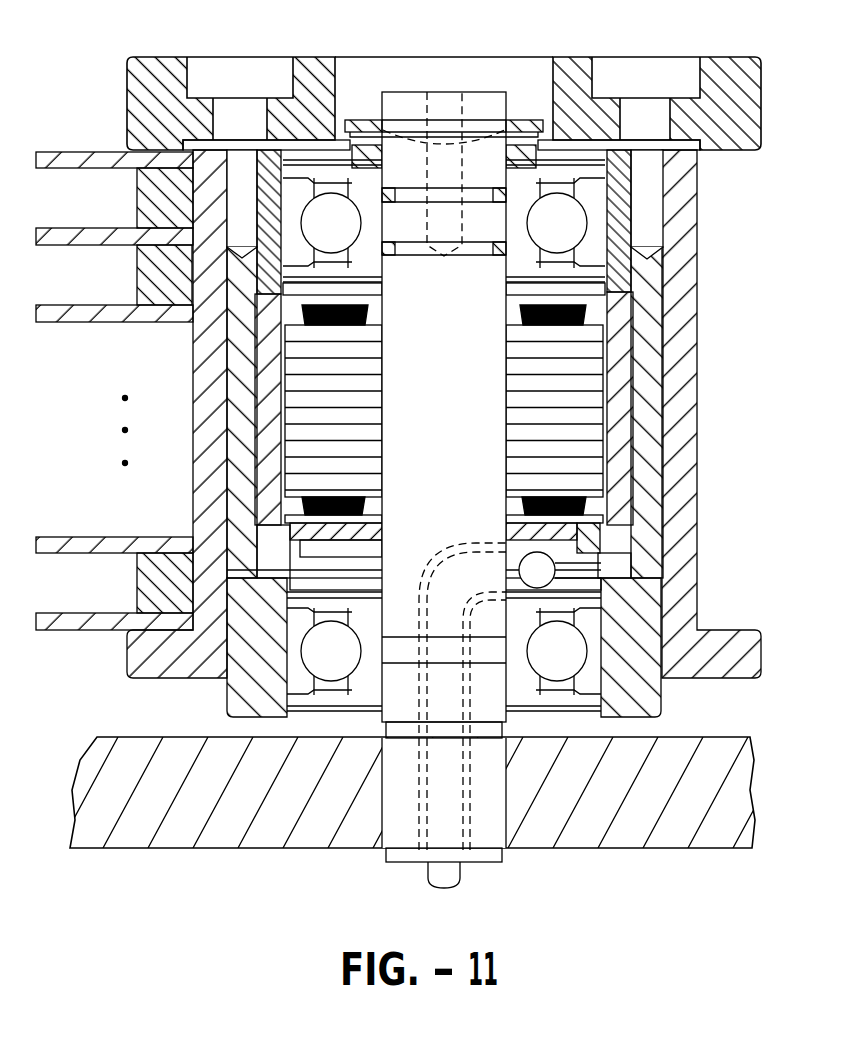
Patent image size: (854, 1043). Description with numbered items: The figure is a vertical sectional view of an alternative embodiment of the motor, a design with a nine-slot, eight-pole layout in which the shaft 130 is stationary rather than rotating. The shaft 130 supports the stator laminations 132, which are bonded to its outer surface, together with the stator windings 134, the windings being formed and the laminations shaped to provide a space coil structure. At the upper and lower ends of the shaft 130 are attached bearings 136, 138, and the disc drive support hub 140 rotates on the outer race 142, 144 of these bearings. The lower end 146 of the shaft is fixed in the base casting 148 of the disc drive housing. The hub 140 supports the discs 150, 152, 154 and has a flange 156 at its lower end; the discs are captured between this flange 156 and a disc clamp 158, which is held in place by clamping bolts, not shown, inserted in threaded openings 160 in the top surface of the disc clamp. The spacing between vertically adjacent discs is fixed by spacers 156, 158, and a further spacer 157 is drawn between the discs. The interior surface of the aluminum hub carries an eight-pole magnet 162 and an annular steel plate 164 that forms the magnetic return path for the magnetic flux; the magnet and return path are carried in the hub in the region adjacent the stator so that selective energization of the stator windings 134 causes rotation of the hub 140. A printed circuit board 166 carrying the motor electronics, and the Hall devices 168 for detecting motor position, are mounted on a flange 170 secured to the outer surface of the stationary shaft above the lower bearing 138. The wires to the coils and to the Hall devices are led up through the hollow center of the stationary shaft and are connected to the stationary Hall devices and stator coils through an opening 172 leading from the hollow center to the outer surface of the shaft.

The shaft 130 is at (485, 840).
The stator laminations 132 is at (592, 402).
The stator windings 134 is at (592, 505).
The bearing 136 is at (570, 230).
The lower bearing 138 is at (574, 642).
The disc drive support hub 140 is at (687, 337).
The outer race 142 is at (600, 202).
The outer race 144 is at (597, 663).
The lower end of the shaft 146 is at (402, 867).
The base casting 148 is at (258, 838).
The disc 150 is at (102, 157).
The disc 152 is at (86, 235).
The disc 154 is at (95, 312).
The flange 156 is at (707, 680).
The spacer 157 is at (143, 202).
The disc clamp 158 is at (719, 67).
The threaded openings 160 is at (243, 160).
The eight-pole magnet 162 is at (625, 337).
The annular steel plate 164 is at (654, 373).
The printed circuit board 166 is at (290, 527).
The Hall devices 168 is at (302, 513).
The flange 170 is at (262, 580).
The opening 172 is at (542, 570).